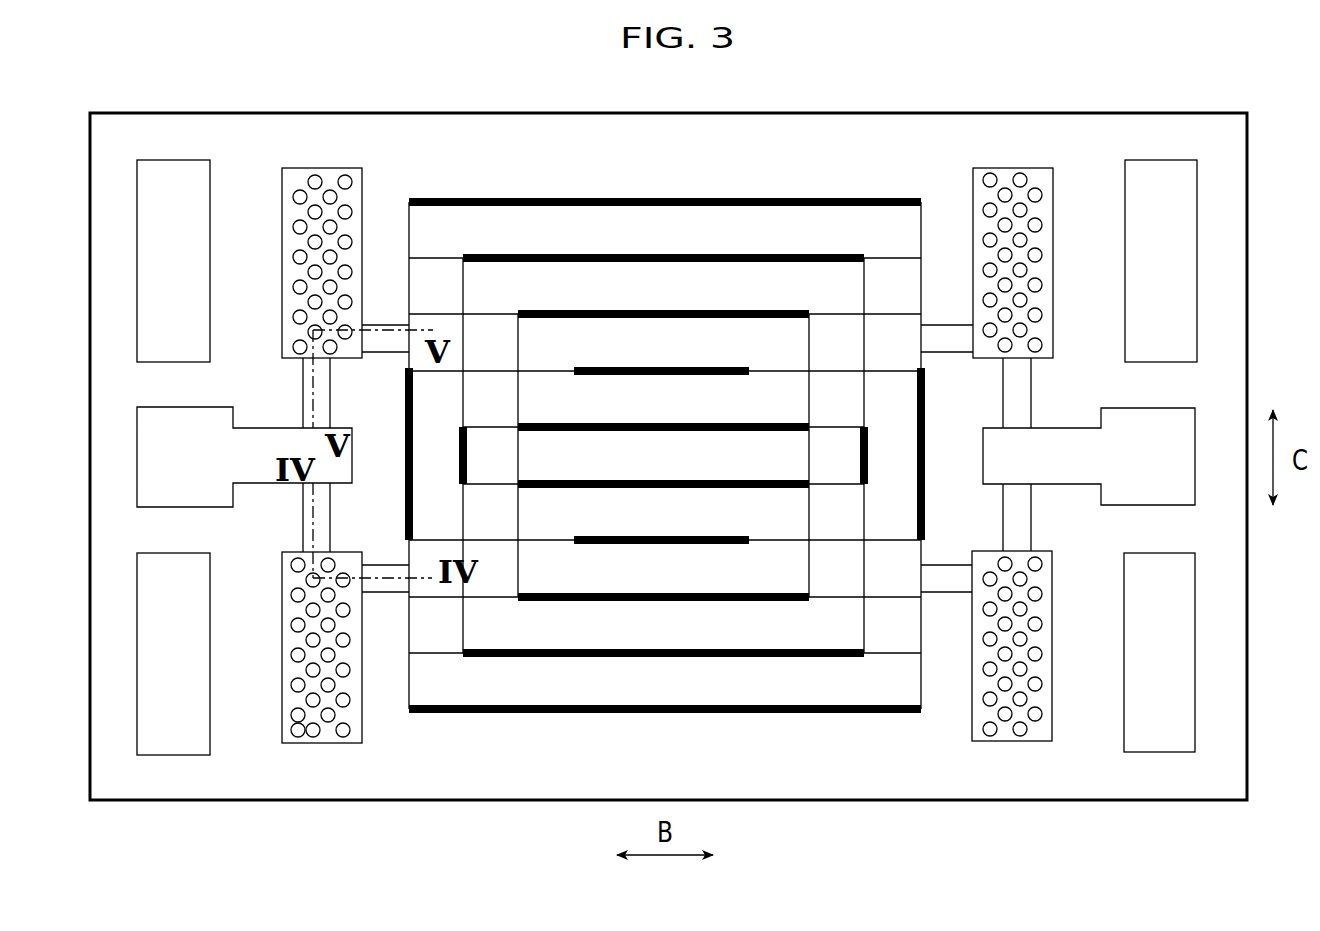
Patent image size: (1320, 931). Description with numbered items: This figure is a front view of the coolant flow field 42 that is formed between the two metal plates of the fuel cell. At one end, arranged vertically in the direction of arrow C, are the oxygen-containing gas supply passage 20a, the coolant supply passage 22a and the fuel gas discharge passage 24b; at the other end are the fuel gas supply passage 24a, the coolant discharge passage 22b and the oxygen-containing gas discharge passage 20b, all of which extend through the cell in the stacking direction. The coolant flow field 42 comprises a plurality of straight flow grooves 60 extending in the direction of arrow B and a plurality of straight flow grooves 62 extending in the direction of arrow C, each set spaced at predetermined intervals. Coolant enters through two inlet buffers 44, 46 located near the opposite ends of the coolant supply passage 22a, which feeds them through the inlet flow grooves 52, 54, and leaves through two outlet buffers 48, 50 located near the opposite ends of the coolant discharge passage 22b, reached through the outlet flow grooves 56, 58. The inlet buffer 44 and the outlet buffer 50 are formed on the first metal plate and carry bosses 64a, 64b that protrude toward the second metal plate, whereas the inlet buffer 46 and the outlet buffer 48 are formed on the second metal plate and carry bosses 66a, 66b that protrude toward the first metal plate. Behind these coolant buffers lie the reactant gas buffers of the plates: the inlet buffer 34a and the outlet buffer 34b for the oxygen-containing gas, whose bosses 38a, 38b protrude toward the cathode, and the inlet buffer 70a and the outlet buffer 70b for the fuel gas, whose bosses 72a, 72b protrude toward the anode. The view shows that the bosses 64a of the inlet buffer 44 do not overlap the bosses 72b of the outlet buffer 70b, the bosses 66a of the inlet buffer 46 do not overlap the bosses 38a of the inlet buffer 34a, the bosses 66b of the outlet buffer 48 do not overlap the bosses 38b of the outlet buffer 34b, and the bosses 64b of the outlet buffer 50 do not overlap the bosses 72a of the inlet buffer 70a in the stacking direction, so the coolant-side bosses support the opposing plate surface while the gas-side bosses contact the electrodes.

The coolant flow field 42 is at (866, 90).
The oxygen-containing gas supply passage 20a is at (173, 261).
The oxygen-containing gas discharge passage 20b is at (1159, 652).
The coolant supply passage 22a is at (244, 457).
The coolant discharge passage 22b is at (1089, 456).
The fuel gas supply passage 24a is at (1161, 261).
The fuel gas discharge passage 24b is at (173, 654).
The inlet buffer 46 is at (294, 331).
The inlet buffer 34a is at (264, 214).
The inlet buffer 44 is at (292, 581).
The outlet buffer 70b is at (267, 699).
The outlet buffer 50 is at (1027, 331).
The inlet buffer 70a is at (1075, 215).
The outlet buffer 48 is at (1045, 583).
The outlet buffer 34b is at (1069, 701).
The bosses 66a is at (300, 190).
The bosses 38a is at (345, 175).
The bosses 72a is at (990, 173).
The bosses 64b is at (1035, 188).
The bosses 64a is at (298, 737).
The bosses 72b is at (343, 737).
The bosses 38b is at (990, 736).
The bosses 66b is at (1035, 721).
The inlet flow grooves 54 is at (302, 402).
The inlet flow grooves 52 is at (302, 518).
The outlet flow grooves 58 is at (1031, 400).
The outlet flow grooves 56 is at (1031, 518).
The straight flow grooves 60 is at (642, 656).
The straight flow grooves 62 is at (413, 478).